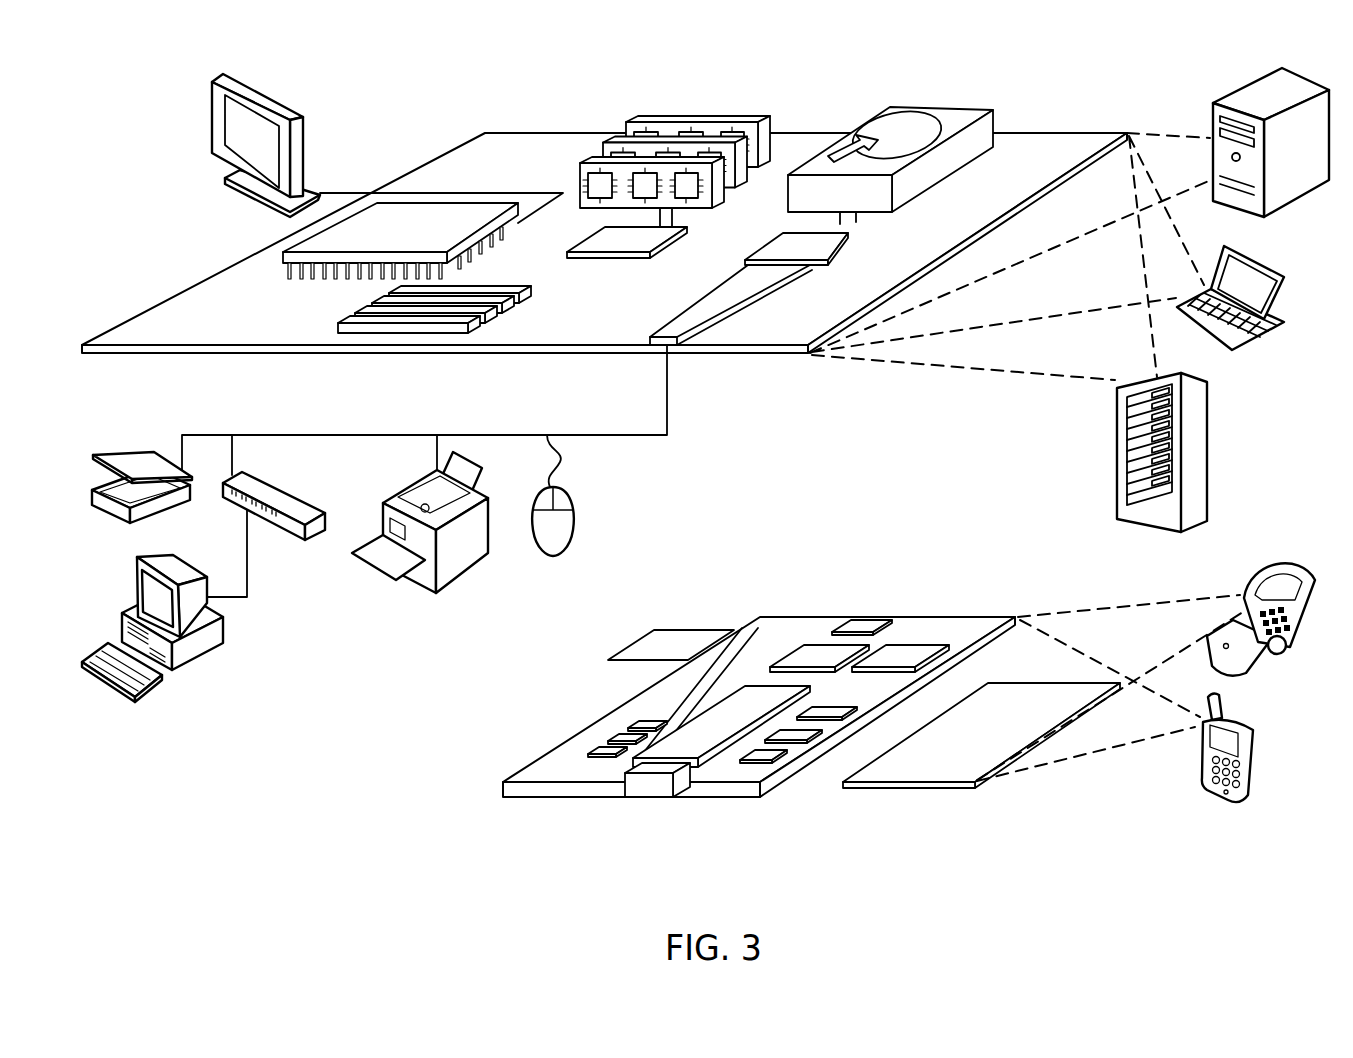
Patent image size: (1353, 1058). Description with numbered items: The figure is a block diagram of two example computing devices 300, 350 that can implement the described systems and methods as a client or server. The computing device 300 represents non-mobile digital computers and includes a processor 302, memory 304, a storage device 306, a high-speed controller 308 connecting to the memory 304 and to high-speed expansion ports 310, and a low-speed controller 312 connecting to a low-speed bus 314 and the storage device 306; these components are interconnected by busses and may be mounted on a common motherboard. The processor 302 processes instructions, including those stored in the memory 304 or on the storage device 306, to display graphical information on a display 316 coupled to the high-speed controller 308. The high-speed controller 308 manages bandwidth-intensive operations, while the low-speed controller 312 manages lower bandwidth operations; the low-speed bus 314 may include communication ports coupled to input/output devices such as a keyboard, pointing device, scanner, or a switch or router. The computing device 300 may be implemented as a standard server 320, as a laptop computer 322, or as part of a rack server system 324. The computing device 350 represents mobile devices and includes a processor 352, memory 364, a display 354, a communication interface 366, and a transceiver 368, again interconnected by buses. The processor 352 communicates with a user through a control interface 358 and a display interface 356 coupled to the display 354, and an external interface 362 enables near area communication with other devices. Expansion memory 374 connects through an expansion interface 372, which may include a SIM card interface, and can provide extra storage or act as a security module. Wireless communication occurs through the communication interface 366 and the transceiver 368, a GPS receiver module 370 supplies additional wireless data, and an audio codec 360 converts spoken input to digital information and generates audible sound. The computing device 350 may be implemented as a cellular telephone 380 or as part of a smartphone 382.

The computing device 300 is at (119, 89).
The processor 302 is at (283, 256).
The memory 304 is at (630, 118).
The storage device 306 is at (877, 103).
The high-speed controller 308 is at (603, 240).
The high-speed expansion ports 310 is at (368, 318).
The low-speed controller 312 is at (783, 242).
The low-speed bus 314 is at (683, 345).
The display 316 is at (206, 74).
The standard server 320 is at (1213, 112).
The laptop computer 322 is at (1284, 276).
The rack server system 324 is at (1115, 478).
The computing device 350 is at (476, 798).
The processor 352 is at (688, 750).
The display 354 is at (938, 770).
The display interface 356 is at (762, 757).
The control interface 358 is at (798, 733).
The audio codec 360 is at (825, 712).
The external interface 362 is at (652, 787).
The memory 364 is at (600, 742).
The communication interface 366 is at (817, 655).
The transceiver 368 is at (897, 653).
The GPS receiver module 370 is at (870, 620).
The expansion interface 372 is at (740, 628).
The expansion memory 374 is at (660, 630).
The cellular telephone 380 is at (1268, 590).
The smartphone 382 is at (1202, 755).